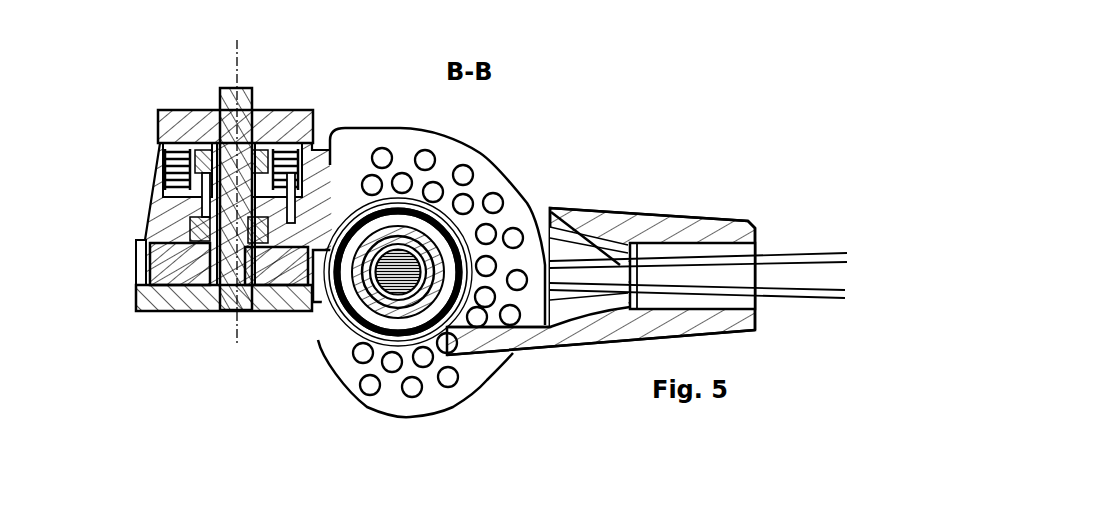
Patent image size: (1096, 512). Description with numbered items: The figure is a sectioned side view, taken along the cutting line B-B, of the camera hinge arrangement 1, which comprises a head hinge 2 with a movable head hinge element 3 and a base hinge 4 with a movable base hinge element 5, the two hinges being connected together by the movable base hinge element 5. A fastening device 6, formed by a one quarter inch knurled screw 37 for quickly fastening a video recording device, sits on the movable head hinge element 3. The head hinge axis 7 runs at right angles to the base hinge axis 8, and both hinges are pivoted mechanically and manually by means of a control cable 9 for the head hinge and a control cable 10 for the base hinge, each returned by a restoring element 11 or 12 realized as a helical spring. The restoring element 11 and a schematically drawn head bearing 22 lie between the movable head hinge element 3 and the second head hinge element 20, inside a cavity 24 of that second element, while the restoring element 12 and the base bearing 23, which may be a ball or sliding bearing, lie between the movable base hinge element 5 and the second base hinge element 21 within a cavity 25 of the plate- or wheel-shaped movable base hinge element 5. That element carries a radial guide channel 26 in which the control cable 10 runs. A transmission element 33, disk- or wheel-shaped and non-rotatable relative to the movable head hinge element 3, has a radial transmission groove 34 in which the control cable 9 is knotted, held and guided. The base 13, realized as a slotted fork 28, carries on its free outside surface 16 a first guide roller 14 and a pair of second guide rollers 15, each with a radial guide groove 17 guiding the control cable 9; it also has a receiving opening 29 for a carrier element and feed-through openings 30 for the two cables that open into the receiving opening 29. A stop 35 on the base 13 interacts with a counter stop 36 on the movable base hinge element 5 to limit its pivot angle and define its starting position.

The camera hinge arrangement 1 is at (756, 148).
The head hinge 2 is at (160, 210).
The movable head hinge element 3 is at (300, 122).
The base hinge 4 is at (513, 206).
The movable base hinge element 5 is at (355, 152).
The fastening device 6 is at (252, 112).
The head hinge axis 7 is at (240, 58).
The base hinge axis 8 is at (392, 288).
The control cable 9 is at (634, 186).
The control cable 10 is at (556, 192).
The restoring element 11 is at (168, 172).
The restoring element 12 is at (385, 166).
The base 13 is at (668, 222).
The first guide roller 14 is at (541, 380).
The pair of second guide rollers 15 is at (348, 408).
The free outside surface 16 is at (588, 376).
The radial guide groove 17 is at (410, 396).
The second head hinge element 20 is at (150, 238).
The second base hinge element 21 is at (560, 206).
The head bearing 22 is at (180, 142).
The base bearing 23 is at (462, 236).
The cavity 24 is at (145, 300).
The cavity 25 is at (450, 337).
The radial guide channel 26 is at (460, 140).
The fork 28 is at (618, 336).
The receiving opening 29 is at (760, 248).
The feed-through openings 30 is at (617, 262).
The transmission element 33 is at (195, 285).
The transmission groove 34 is at (293, 284).
The stop 35 is at (440, 338).
The counter stop 36 is at (385, 295).
The knurled screw 37 is at (212, 300).